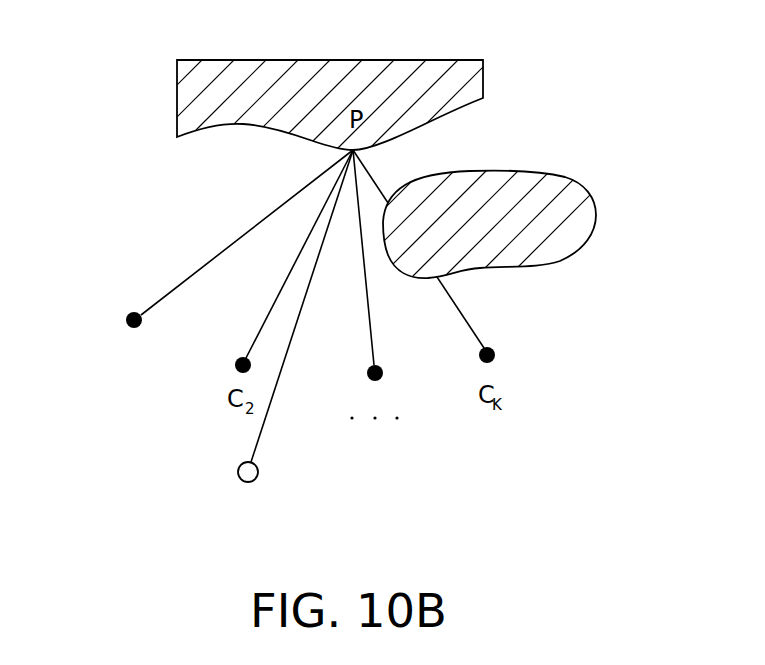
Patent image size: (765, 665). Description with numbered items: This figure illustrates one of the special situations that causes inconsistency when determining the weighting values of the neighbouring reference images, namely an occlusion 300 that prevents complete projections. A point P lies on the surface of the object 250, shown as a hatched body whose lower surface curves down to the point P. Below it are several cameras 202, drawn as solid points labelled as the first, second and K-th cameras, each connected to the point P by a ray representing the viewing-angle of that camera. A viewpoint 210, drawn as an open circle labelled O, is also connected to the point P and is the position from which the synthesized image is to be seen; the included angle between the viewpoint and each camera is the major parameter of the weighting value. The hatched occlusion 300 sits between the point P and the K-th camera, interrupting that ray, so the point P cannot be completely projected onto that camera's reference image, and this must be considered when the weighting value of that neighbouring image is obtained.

The object 250 is at (426, 80).
The occlusion 300 is at (542, 172).
The camera 202 is at (131, 311).
The viewpoint 210 is at (238, 471).